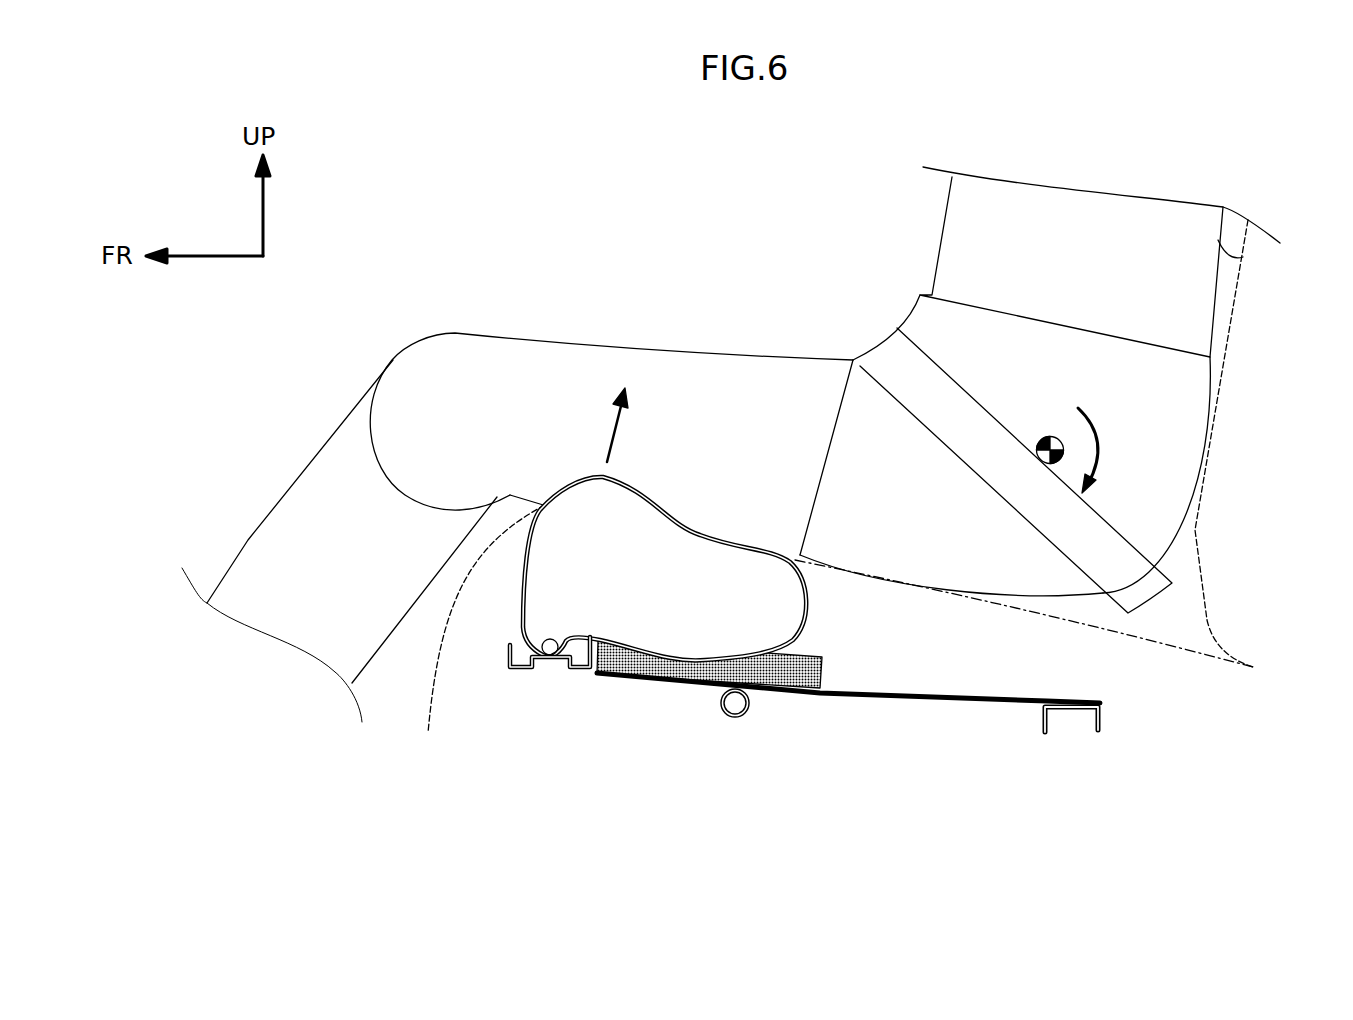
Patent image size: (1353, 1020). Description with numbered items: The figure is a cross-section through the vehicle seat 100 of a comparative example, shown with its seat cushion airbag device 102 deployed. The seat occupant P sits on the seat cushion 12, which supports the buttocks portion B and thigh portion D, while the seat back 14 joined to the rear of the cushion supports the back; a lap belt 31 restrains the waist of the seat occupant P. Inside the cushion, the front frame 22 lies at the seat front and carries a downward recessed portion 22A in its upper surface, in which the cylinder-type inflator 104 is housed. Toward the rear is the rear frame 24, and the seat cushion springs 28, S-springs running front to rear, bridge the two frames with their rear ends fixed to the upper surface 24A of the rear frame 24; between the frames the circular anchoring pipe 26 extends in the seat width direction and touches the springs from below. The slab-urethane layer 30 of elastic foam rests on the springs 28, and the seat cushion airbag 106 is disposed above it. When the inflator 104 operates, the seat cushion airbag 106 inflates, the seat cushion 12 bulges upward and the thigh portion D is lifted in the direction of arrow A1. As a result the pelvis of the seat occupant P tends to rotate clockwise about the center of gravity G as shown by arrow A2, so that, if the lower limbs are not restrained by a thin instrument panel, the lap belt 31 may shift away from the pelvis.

The vehicle seat 100 is at (662, 217).
The seat cushion airbag device 102 is at (638, 697).
The inflator 104 is at (553, 634).
The seat cushion airbag 106 is at (715, 540).
The seat cushion 12 is at (1187, 645).
The seat back 14 is at (1213, 245).
The front frame 22 is at (510, 670).
The recessed portion 22A is at (530, 637).
The rear frame 24 is at (1044, 735).
The upper surface 24A is at (1087, 702).
The anchoring pipe 26 is at (733, 717).
The seat cushion springs 28 is at (940, 705).
The slab-urethane layer 30 is at (830, 672).
The lap belt 31 is at (1113, 527).
The seat occupant P is at (938, 242).
The thigh portion D is at (767, 350).
The center of gravity G is at (1052, 436).
The buttocks portion B is at (1025, 587).
The arrow A1 is at (603, 425).
The arrow A2 is at (1107, 458).